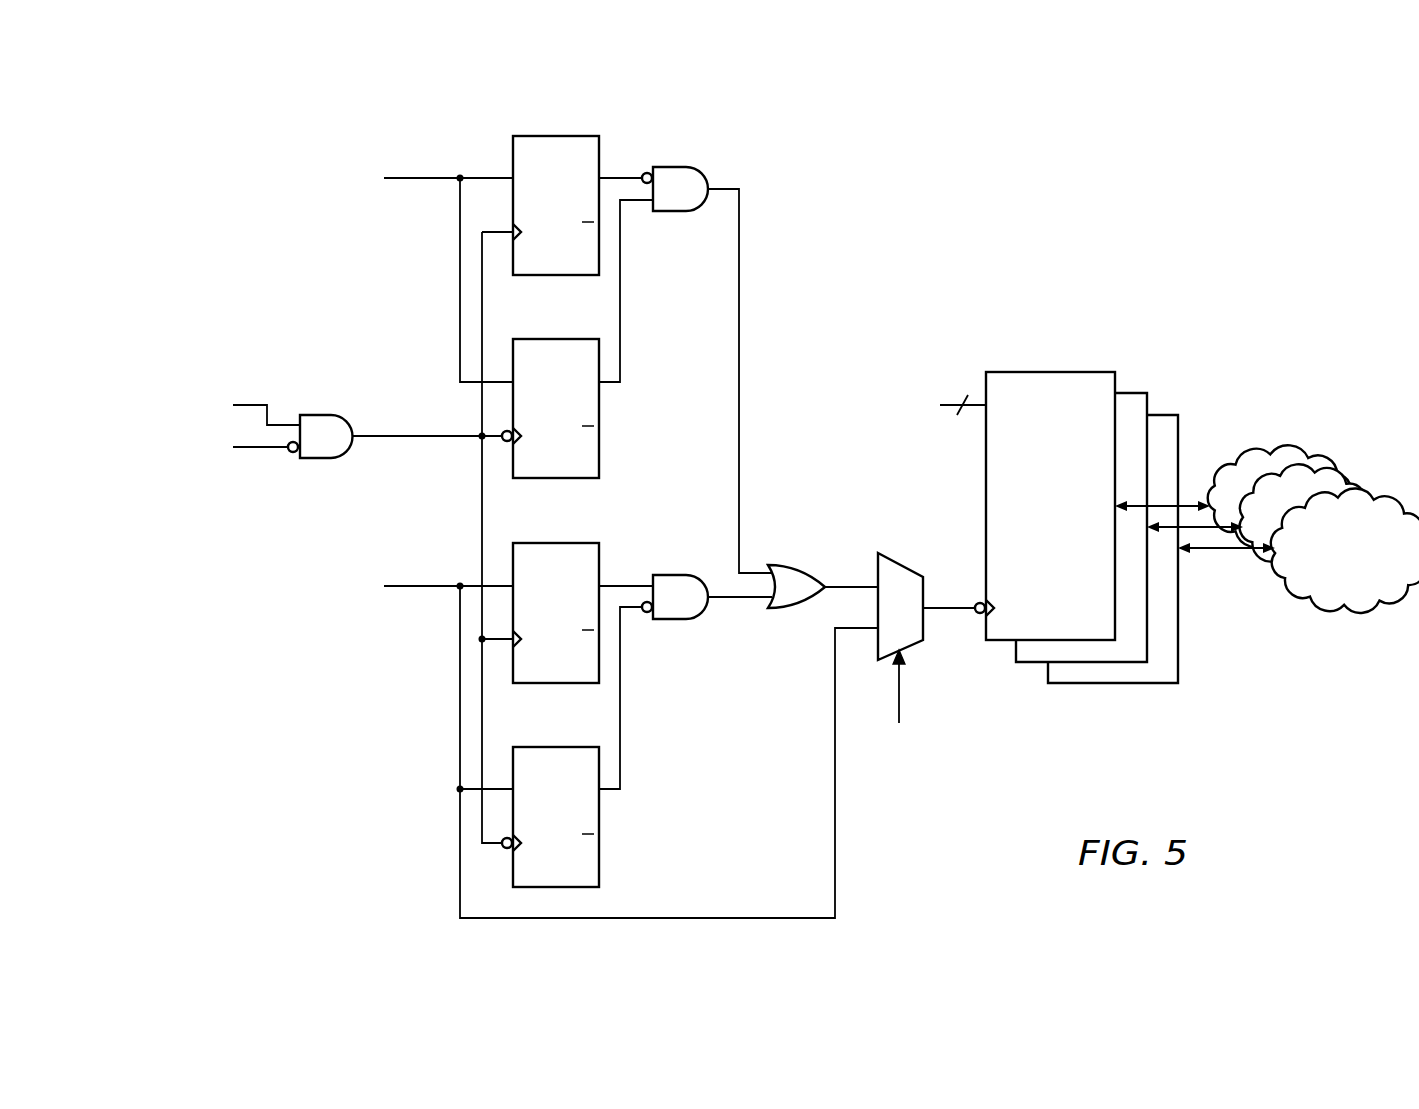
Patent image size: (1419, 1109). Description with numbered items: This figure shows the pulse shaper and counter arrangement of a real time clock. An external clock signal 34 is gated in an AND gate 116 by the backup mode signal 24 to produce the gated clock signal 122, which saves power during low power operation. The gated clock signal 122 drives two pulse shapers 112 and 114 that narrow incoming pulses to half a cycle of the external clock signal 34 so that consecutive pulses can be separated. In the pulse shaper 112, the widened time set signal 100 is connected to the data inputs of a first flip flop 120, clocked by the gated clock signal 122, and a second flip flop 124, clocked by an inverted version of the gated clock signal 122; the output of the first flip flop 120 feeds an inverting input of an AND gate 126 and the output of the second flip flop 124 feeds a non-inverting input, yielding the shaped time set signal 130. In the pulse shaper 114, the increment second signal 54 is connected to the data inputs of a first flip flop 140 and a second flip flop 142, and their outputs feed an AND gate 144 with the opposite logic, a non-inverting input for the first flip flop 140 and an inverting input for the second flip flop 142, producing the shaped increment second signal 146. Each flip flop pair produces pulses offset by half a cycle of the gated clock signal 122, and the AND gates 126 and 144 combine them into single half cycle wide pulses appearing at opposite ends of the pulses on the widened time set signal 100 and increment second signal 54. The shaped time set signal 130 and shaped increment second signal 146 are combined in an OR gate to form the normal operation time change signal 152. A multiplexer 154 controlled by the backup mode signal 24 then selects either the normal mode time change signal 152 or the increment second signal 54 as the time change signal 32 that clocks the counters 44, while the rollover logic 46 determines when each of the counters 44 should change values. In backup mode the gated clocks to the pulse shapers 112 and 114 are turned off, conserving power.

The backup mode signal 24 is at (262, 450).
The time change signal 32 is at (940, 610).
The external clock signal 34 is at (250, 405).
The counters 44 is at (1050, 372).
The rollover logic 46 is at (1287, 452).
The increment second signal 54 is at (422, 584).
The widened time set signal 100 is at (422, 178).
The pulse shaper 112 is at (661, 328).
The pulse shaper 114 is at (669, 690).
The AND gate 116 is at (325, 415).
The first flip flop 120 is at (557, 136).
The gated clock signal 122 is at (393, 438).
The second flip flop 124 is at (557, 339).
The AND gate 126 is at (680, 167).
The shaped time set signal 130 is at (739, 328).
The first flip flop 140 is at (557, 543).
The second flip flop 142 is at (557, 747).
The AND gate 144 is at (680, 575).
The shaped increment second signal 146 is at (728, 600).
The normal operation time change signal 152 is at (850, 585).
The multiplexer 154 is at (900, 565).